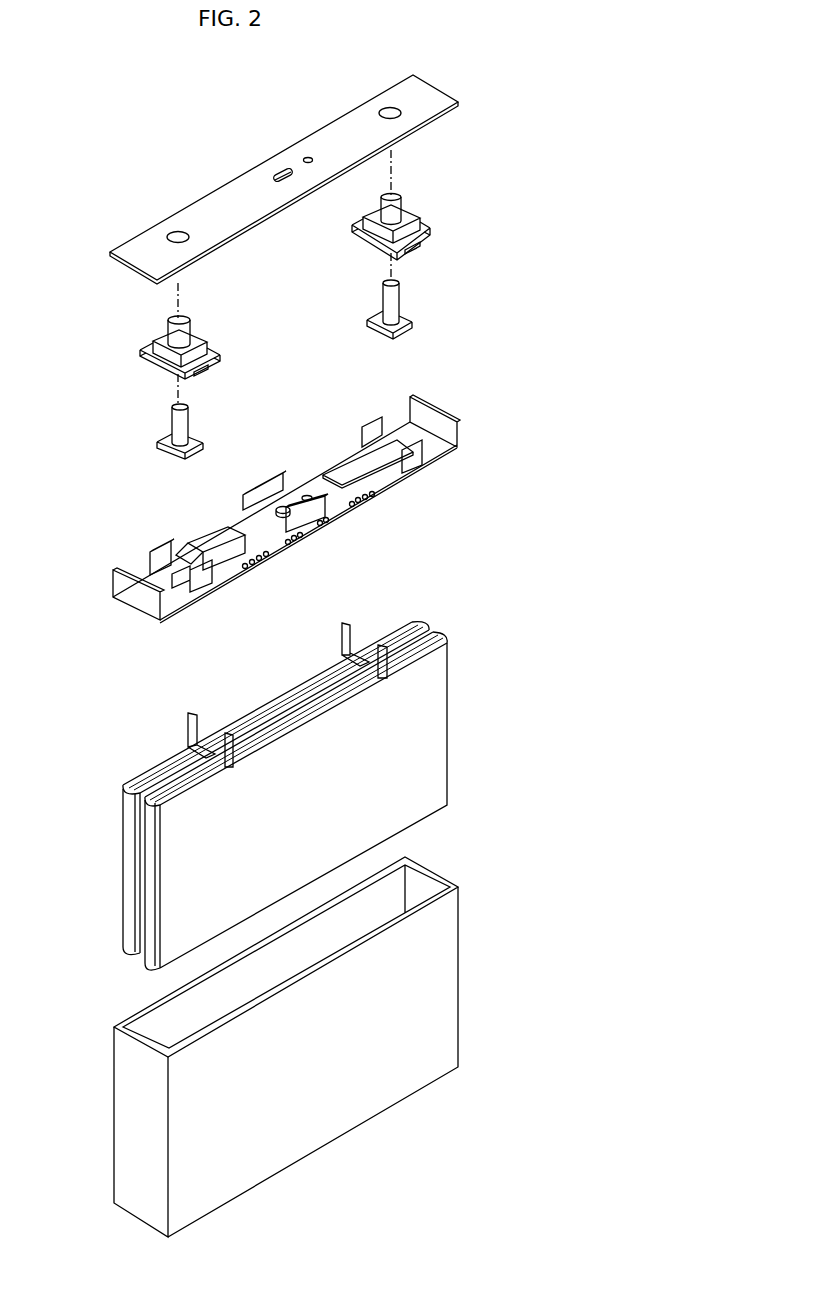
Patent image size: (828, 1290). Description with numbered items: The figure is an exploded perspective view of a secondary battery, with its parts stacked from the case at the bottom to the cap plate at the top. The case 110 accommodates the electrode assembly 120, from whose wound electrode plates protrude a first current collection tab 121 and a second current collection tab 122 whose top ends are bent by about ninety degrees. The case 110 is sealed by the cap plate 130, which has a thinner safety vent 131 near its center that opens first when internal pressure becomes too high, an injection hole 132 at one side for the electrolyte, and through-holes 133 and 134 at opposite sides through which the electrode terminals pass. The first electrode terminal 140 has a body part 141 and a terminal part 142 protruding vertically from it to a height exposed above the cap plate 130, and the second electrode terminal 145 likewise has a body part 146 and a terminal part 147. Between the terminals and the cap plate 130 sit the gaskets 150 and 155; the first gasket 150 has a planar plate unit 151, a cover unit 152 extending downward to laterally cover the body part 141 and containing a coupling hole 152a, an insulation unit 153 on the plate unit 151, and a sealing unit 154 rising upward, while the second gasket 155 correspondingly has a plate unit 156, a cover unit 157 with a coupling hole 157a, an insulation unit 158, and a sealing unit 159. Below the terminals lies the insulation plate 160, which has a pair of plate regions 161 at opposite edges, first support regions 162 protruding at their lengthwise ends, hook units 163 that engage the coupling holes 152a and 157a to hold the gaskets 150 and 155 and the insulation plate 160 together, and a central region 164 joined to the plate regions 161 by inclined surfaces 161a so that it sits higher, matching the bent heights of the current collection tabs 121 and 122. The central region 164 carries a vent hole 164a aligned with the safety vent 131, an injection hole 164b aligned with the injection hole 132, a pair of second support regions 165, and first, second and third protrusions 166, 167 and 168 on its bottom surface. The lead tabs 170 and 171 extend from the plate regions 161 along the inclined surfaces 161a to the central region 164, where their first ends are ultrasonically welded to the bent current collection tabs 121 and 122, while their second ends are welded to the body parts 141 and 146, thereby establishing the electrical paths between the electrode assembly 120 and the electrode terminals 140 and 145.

The case 110 is at (120, 1118).
The electrode assembly 120 is at (255, 804).
The first current collection tab 121 is at (232, 733).
The second current collection tab 122 is at (379, 648).
The cap plate 130 is at (259, 169).
The safety vent 131 is at (283, 172).
The injection hole 132 is at (307, 155).
The through-hole 133 is at (178, 232).
The through-hole 134 is at (389, 108).
The first electrode terminal 140 is at (168, 441).
The body part 141 is at (158, 447).
The terminal part 142 is at (188, 407).
The second electrode terminal 145 is at (420, 304).
The body part 146 is at (411, 325).
The terminal part 147 is at (394, 283).
The gasket 150 is at (174, 345).
The plate unit 151 is at (157, 357).
The cover unit 152 is at (210, 371).
The coupling hole 152a is at (205, 370).
The insulation unit 153 is at (160, 340).
The sealing unit 154 is at (187, 322).
The gasket 155 is at (431, 200).
The plate unit 156 is at (425, 222).
The cover unit 157 is at (431, 237).
The coupling hole 157a is at (420, 241).
The insulation unit 158 is at (406, 208).
The sealing unit 159 is at (392, 194).
The insulation plate 160 is at (244, 526).
The plate region 161 is at (285, 534).
The inclined surface 161a is at (188, 550).
The first support region 162 is at (130, 598).
The hook unit 163 is at (148, 546).
The central region 164 is at (219, 532).
The vent hole 164a is at (284, 510).
The injection hole 164b is at (306, 494).
The second support region 165 is at (307, 518).
The first protrusion 166 is at (246, 568).
The second protrusion 167 is at (370, 497).
The third protrusion 168 is at (330, 521).
The lead tab 170 is at (172, 580).
The lead tab 171 is at (388, 479).